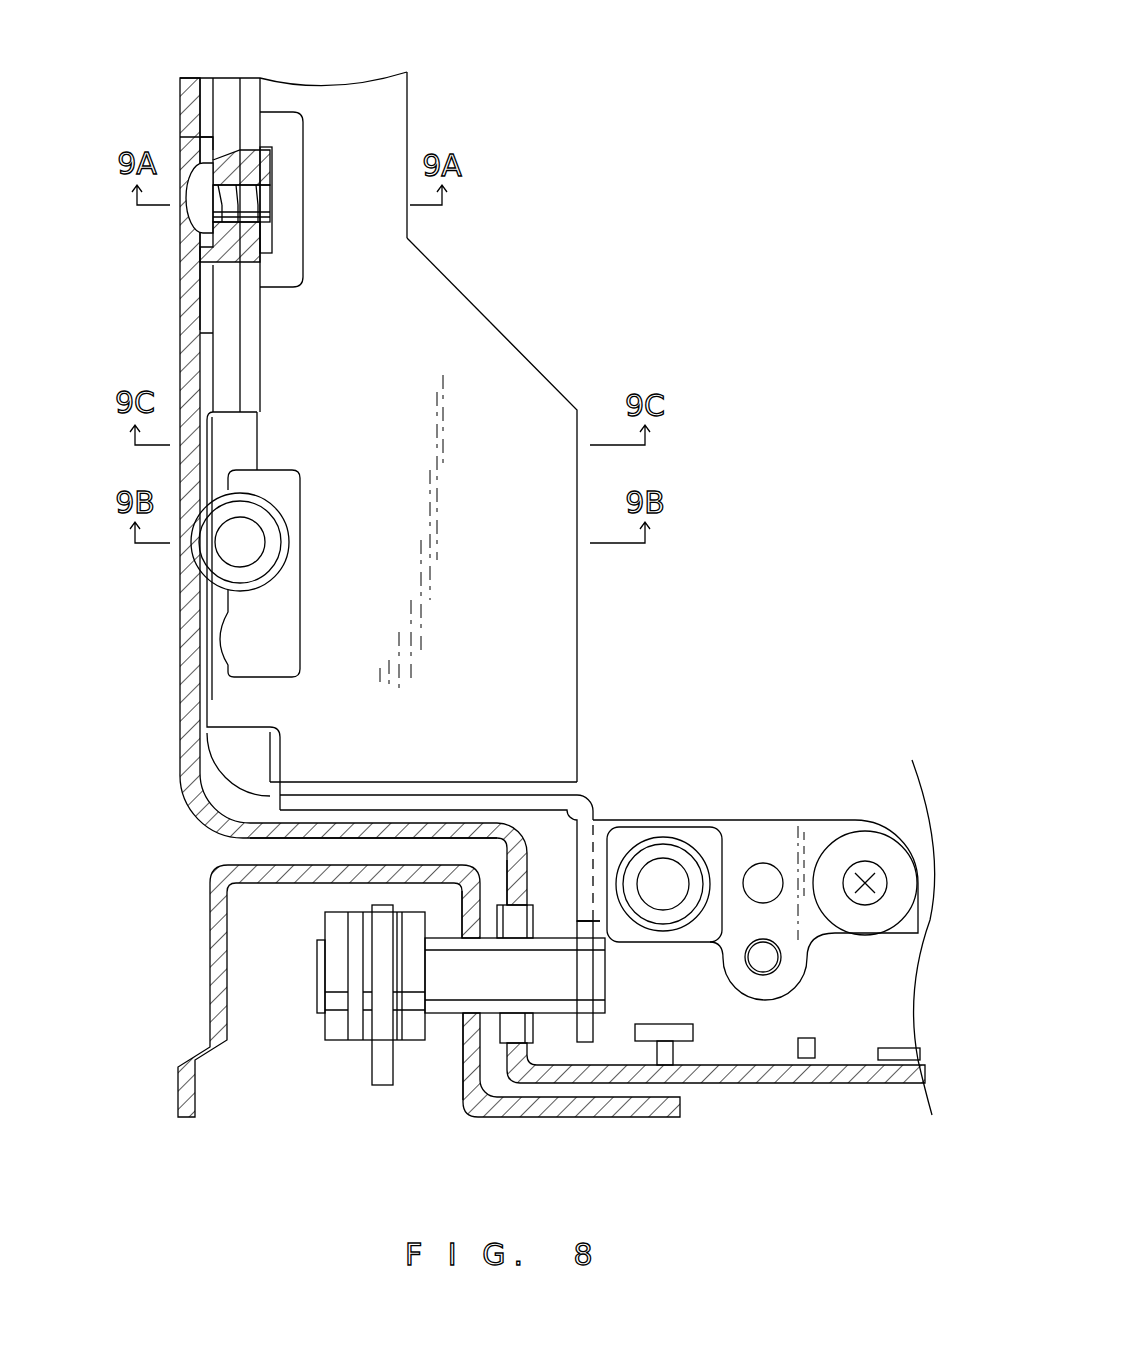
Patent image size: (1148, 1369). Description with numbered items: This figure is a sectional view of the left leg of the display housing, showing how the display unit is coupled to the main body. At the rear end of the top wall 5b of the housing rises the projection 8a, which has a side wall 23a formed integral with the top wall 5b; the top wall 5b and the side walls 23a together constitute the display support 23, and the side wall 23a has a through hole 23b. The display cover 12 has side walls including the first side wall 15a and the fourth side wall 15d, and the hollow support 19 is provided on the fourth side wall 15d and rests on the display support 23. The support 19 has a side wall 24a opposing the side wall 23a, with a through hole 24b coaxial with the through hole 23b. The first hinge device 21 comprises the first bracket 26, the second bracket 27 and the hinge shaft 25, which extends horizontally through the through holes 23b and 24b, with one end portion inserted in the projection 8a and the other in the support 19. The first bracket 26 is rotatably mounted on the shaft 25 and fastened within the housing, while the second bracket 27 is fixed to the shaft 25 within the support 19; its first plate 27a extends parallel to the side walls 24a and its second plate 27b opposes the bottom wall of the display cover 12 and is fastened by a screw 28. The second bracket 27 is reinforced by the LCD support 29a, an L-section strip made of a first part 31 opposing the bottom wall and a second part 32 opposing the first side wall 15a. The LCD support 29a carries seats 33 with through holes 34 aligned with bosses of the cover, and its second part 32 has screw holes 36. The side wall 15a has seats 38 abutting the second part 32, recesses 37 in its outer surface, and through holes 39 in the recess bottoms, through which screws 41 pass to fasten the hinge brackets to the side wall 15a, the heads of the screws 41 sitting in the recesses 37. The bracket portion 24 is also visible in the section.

The top wall 5b is at (527, 1113).
The projection 8a is at (210, 883).
The display cover 12 is at (180, 724).
The first side wall 15a is at (182, 350).
The fourth side wall 15d is at (305, 836).
The support 19 is at (683, 985).
The first hinge device 21 is at (449, 1020).
The display support 23 is at (520, 1013).
The side wall 23a is at (468, 1058).
The through hole 23b is at (470, 935).
The mounting bracket 24 is at (780, 1072).
The side wall 24a is at (512, 880).
The through hole 24b is at (521, 930).
The hinge shaft 25 is at (500, 993).
The first bracket 26 is at (372, 1055).
The second bracket 27 is at (538, 785).
The first plate 27a is at (578, 1008).
The second plate 27b is at (770, 862).
The screw 28 is at (863, 892).
The LCD support 29a is at (492, 384).
The first part 31 is at (440, 308).
The second part 32 is at (402, 262).
The seat 33 is at (226, 592).
The through hole 34 is at (230, 548).
The screw hole 36 is at (268, 164).
The recess 37 is at (186, 165).
The seat 38 is at (233, 162).
The through hole 39 is at (205, 238).
The screw 41 is at (200, 218).